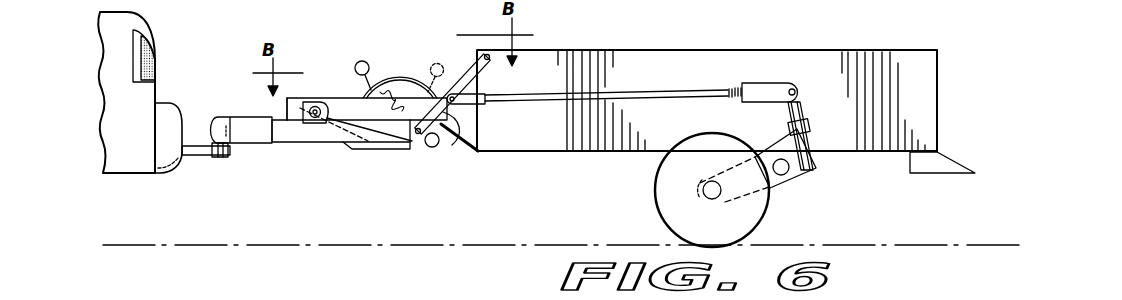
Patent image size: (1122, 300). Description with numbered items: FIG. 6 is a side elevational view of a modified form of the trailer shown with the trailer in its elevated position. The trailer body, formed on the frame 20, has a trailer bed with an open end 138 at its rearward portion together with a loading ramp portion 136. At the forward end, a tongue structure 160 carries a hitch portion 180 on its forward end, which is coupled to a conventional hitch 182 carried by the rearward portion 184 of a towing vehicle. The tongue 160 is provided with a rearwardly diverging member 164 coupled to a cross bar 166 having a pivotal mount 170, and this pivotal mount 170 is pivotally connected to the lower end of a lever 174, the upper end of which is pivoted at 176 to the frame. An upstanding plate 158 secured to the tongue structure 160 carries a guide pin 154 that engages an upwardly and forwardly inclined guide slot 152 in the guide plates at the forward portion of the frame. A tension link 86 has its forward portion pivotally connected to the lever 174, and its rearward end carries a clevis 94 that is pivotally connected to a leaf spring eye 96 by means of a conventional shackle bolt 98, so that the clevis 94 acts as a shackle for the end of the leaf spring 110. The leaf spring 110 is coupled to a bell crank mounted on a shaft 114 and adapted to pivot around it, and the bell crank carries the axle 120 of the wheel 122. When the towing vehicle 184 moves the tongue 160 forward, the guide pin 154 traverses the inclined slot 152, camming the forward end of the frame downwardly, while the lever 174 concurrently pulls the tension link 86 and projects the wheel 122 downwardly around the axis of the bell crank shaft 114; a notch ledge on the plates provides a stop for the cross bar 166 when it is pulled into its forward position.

The frame 20 is at (553, 135).
The tension link 86 is at (640, 91).
The clevis 94 is at (777, 81).
The leaf spring eye 96 is at (798, 98).
The shackle bolt 98 is at (793, 90).
The leaf spring 110 is at (804, 127).
The shaft 114 is at (781, 176).
The axle 120 is at (717, 196).
The wheel 122 is at (666, 206).
The loading ramp portion 136 is at (966, 148).
The open end 138 is at (938, 88).
The guide slot 152 is at (347, 120).
The guide pin 154 is at (313, 106).
The upstanding plate 158 is at (287, 110).
The tongue structure 160 is at (294, 137).
The rearwardly diverging member 164 is at (371, 140).
The cross bar 166 is at (441, 146).
The pivotal mount 170 is at (417, 135).
The lever 174 is at (448, 142).
The lever pivot 176 is at (486, 61).
The hitch portion 180 is at (216, 118).
The hitch 182 is at (208, 157).
The rearward portion of towing vehicle 184 is at (140, 163).